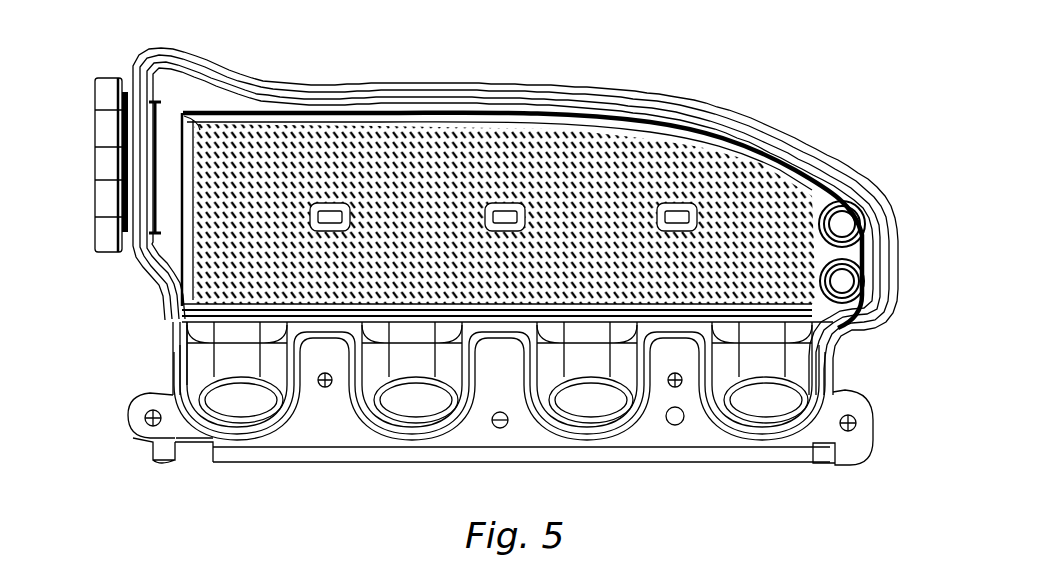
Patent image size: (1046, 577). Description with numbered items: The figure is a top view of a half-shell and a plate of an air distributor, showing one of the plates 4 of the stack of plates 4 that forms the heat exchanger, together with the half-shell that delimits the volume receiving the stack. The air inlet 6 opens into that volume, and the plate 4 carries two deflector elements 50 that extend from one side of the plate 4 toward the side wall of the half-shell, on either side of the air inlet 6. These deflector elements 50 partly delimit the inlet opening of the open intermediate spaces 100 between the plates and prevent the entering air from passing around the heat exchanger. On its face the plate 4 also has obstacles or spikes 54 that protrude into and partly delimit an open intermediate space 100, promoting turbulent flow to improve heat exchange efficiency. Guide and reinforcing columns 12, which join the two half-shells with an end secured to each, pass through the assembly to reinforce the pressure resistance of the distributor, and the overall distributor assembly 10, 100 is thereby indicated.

The stack of plates 4 is at (807, 190).
The air inlet 6 is at (105, 162).
The intake manifold 10 is at (779, 274).
The open intermediate spaces 100 is at (546, 366).
The guide and reinforcing columns 12 is at (340, 213).
The deflector elements 50 is at (213, 108).
The obstacles or spikes 54 is at (611, 157).